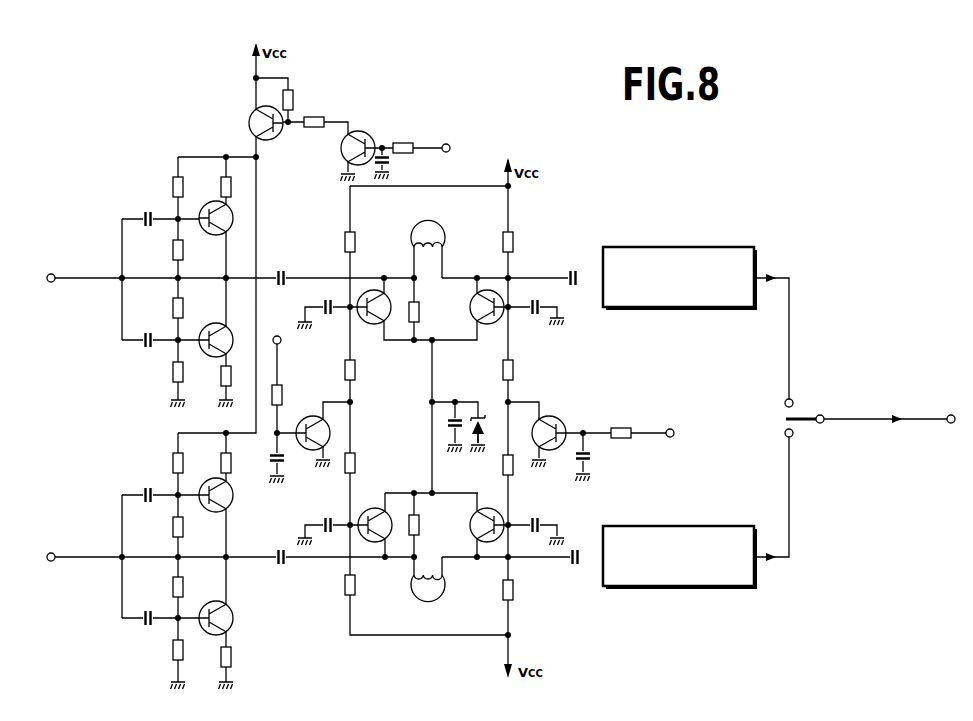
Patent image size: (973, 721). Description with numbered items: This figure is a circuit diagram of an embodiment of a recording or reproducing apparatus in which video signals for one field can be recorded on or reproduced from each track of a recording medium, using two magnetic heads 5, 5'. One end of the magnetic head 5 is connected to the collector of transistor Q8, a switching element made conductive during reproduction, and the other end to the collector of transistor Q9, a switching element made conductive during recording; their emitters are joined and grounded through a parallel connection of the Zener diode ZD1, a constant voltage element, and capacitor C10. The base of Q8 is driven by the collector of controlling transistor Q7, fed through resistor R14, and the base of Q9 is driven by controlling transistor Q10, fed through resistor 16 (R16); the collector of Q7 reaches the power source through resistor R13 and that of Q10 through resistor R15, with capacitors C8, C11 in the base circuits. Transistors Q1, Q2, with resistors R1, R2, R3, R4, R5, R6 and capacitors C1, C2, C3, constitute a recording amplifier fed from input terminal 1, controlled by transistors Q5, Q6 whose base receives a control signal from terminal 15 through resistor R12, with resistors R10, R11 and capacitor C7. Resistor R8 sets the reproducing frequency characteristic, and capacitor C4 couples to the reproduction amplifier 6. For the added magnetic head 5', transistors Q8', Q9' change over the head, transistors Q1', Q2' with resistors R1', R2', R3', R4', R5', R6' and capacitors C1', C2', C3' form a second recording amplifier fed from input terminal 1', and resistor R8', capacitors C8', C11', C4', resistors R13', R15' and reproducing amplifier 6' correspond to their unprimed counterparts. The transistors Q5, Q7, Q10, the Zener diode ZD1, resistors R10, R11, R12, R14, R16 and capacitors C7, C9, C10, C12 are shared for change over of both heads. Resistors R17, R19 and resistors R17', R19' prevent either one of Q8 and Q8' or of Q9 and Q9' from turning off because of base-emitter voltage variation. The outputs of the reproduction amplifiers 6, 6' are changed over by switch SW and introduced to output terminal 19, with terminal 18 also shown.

The input terminal 1 is at (47, 295).
The input terminal 1' is at (47, 574).
The magnetic head 5 is at (439, 228).
The magnetic head 5' is at (442, 590).
The amplifier for reproduction 6 is at (679, 261).
The reproducing amplifier 6' is at (679, 576).
The terminal 15 is at (449, 146).
The resistor 16 is at (277, 336).
The terminal 18 is at (672, 429).
The output terminal 19 is at (951, 414).
The switch SW is at (806, 417).
The transistor Q1 is at (213, 231).
The transistor Q2 is at (214, 324).
The transistor Q5 is at (249, 121).
The transistor Q6 is at (360, 131).
The controlling transistor Q7 is at (318, 417).
The transistor Q8 is at (374, 321).
The transistor Q9 is at (487, 328).
The controlling transistor Q10 is at (557, 418).
The transistor Q1' is at (213, 509).
The transistor Q2' is at (214, 606).
The transistor Q8' is at (375, 547).
The transistor Q9' is at (472, 524).
The resistor R1 is at (161, 181).
The resistor R2 is at (160, 250).
The resistor R3 is at (166, 305).
The resistor R4 is at (158, 372).
The resistor R5 is at (210, 181).
The resistor R6 is at (211, 381).
The resistor R8 is at (431, 307).
The resistor R10 is at (293, 100).
The resistor R11 is at (312, 128).
The resistor R12 is at (404, 142).
The resistor R13 is at (333, 234).
The resistor R14 is at (283, 393).
The resistor R15 is at (530, 234).
The resistor R16 is at (621, 440).
The resistor R17 is at (370, 377).
The resistor R19 is at (530, 372).
The resistor R1' is at (160, 458).
The resistor R2' is at (160, 527).
The resistor R3' is at (162, 576).
The resistor R4' is at (159, 658).
The resistor R5' is at (210, 458).
The resistor R6' is at (213, 660).
The resistor R8' is at (432, 533).
The resistor R13' is at (331, 591).
The resistor R15' is at (533, 603).
The resistor R17' is at (374, 458).
The resistor R19' is at (530, 474).
The capacitor C1 is at (138, 206).
The capacitor C2 is at (140, 328).
The capacitor C3 is at (282, 258).
The capacitor C4 is at (572, 255).
The capacitor C7 is at (390, 163).
The capacitor C8 is at (326, 324).
The capacitor C9 is at (270, 461).
The capacitor C10 is at (448, 424).
The capacitor C11 is at (533, 325).
The capacitor C12 is at (578, 458).
The capacitor C1' is at (137, 484).
The capacitor C2' is at (142, 606).
The capacitor C3' is at (280, 573).
The capacitor C4' is at (582, 539).
The capacitor C8' is at (314, 513).
The capacitor C11' is at (530, 518).
The Zener diode ZD1 is at (488, 440).